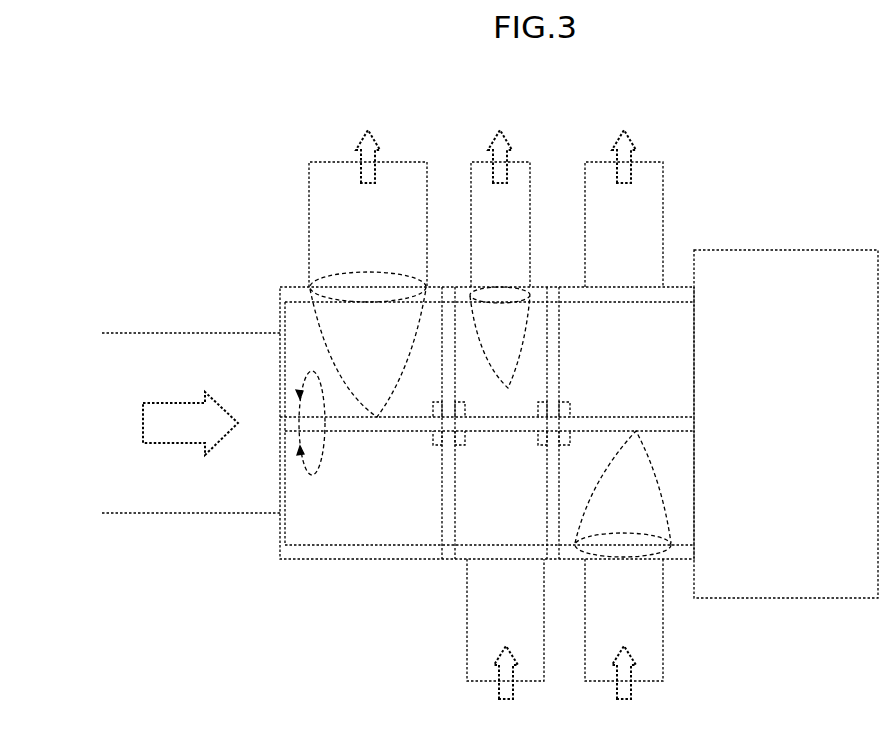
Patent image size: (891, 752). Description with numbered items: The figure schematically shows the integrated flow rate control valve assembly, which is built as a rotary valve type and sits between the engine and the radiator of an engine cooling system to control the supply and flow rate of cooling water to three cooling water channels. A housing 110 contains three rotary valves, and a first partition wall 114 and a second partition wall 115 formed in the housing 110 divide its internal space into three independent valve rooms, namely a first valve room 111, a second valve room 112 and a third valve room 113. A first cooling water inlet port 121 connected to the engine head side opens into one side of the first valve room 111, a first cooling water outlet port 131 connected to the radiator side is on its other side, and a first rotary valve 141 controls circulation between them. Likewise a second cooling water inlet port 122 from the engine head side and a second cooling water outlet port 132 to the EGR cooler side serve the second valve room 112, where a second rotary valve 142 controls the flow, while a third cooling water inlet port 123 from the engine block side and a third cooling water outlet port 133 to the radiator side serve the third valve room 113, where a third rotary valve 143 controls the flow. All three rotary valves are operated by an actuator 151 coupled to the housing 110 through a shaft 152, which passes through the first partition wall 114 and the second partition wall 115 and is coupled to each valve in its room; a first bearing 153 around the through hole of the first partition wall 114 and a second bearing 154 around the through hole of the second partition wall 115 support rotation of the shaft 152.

The housing 110 is at (370, 562).
The first valve room 111 is at (403, 513).
The second valve room 112 is at (527, 513).
The third valve room 113 is at (642, 376).
The first partition wall 114 is at (445, 490).
The second partition wall 115 is at (563, 560).
The first cooling water inlet port 121 is at (189, 423).
The second cooling water inlet port 122 is at (505, 647).
The third cooling water inlet port 123 is at (624, 647).
The first cooling water outlet port 131 is at (368, 194).
The second cooling water outlet port 132 is at (500, 194).
The third cooling water outlet port 133 is at (624, 194).
The first rotary valve 141 is at (325, 338).
The second rotary valve 142 is at (527, 330).
The third rotary valve 143 is at (663, 492).
The actuator 151 is at (786, 424).
The shaft 152 is at (347, 430).
The first bearing 153 is at (435, 437).
The second bearing 154 is at (540, 443).